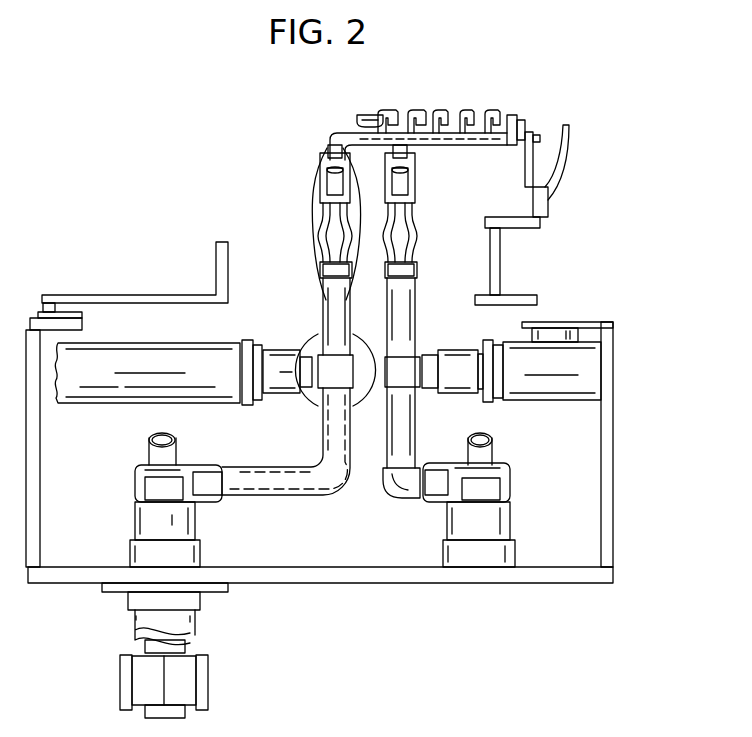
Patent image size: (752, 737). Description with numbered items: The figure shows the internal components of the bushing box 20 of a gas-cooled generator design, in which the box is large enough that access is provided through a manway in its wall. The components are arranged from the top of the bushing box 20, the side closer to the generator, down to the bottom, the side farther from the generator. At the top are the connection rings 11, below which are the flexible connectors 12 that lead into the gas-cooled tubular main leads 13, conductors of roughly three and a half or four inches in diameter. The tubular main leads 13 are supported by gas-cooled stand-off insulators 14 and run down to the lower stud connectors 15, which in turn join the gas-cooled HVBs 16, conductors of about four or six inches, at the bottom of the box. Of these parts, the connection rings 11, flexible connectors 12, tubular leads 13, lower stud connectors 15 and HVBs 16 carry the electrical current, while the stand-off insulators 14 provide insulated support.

The connection rings 11 is at (468, 108).
The flexible connectors 12 is at (318, 214).
The gas-cooled tubular main leads 13 is at (339, 487).
The gas-cooled stand-off insulators 14 is at (292, 350).
The lower stud connectors 15 is at (140, 468).
The gas-cooled HVBs 16 is at (130, 553).
The bushing box 20 is at (640, 343).